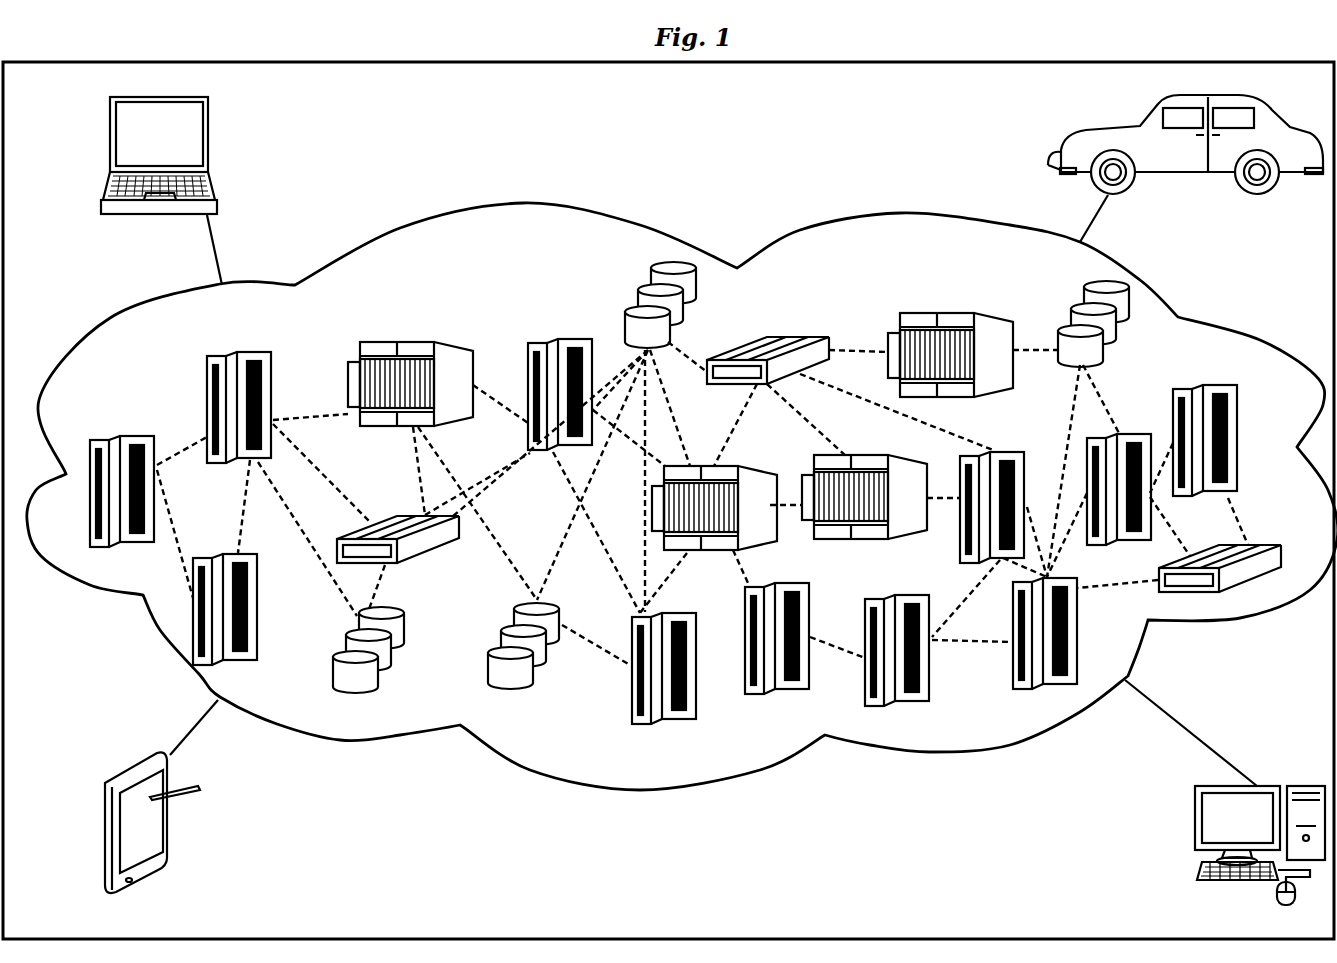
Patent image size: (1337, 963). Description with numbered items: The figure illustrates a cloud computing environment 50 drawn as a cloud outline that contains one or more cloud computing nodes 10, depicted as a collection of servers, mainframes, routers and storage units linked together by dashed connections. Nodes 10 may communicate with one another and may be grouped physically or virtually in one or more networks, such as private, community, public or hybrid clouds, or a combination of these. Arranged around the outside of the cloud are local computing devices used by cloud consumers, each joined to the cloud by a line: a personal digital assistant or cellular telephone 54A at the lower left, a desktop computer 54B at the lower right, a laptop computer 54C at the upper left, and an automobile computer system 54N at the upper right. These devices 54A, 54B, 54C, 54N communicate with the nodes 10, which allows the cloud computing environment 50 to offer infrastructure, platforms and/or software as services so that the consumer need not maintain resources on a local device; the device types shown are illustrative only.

The cloud computing nodes 10 is at (867, 235).
The cloud computing environment 50 is at (538, 237).
The personal digital assistant or cellular telephone 54A is at (152, 846).
The desktop computer 54B is at (1255, 828).
The laptop computer 54C is at (176, 141).
The automobile computer system 54N is at (1198, 162).